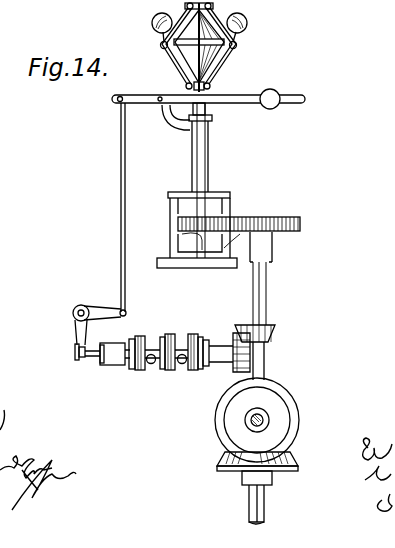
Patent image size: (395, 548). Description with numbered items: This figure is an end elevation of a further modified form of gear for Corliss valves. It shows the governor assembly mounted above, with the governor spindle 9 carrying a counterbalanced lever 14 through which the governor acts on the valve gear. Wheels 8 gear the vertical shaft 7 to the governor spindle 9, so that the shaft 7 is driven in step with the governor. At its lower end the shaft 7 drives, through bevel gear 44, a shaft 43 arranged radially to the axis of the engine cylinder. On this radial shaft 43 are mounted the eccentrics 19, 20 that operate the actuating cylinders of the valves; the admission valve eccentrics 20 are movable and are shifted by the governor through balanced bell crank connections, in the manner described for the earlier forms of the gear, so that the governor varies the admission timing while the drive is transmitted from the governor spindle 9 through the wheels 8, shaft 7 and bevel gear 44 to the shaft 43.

The counterbalanced lever 14 is at (232, 87).
The governor spindle 9 is at (206, 108).
The wheels 8 is at (286, 218).
The eccentric shaft 7 is at (267, 278).
The bevel gear 44 is at (272, 340).
The shaft 43 is at (93, 362).
The admission valve eccentrics 20 is at (143, 370).
The eccentrics 19 is at (196, 368).